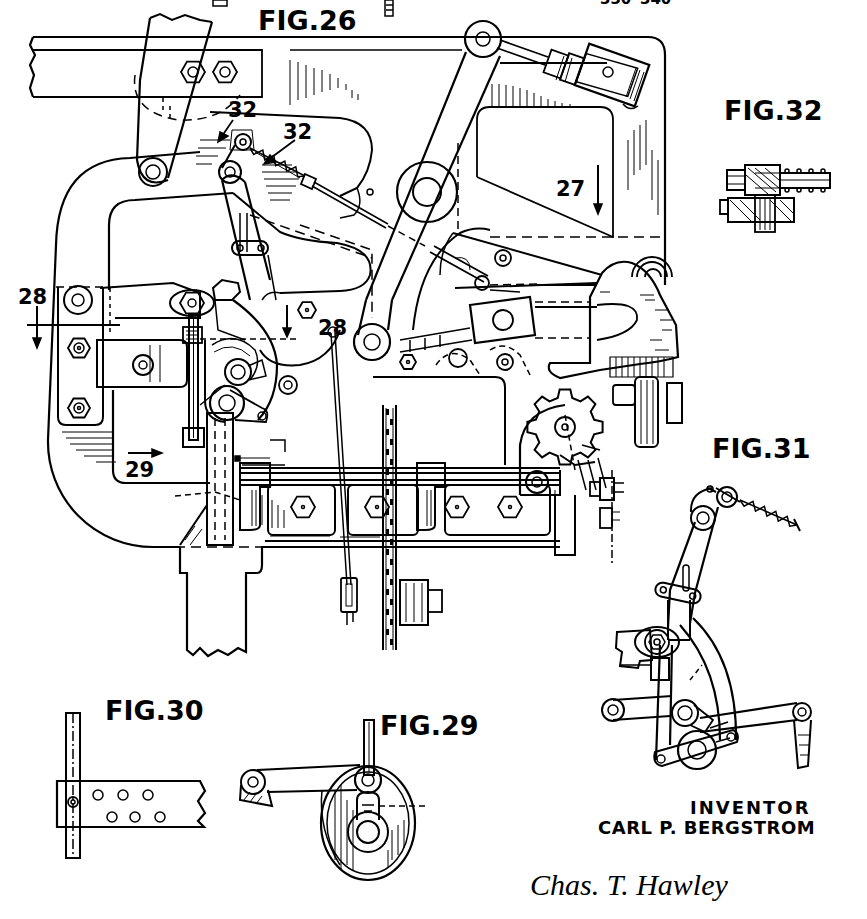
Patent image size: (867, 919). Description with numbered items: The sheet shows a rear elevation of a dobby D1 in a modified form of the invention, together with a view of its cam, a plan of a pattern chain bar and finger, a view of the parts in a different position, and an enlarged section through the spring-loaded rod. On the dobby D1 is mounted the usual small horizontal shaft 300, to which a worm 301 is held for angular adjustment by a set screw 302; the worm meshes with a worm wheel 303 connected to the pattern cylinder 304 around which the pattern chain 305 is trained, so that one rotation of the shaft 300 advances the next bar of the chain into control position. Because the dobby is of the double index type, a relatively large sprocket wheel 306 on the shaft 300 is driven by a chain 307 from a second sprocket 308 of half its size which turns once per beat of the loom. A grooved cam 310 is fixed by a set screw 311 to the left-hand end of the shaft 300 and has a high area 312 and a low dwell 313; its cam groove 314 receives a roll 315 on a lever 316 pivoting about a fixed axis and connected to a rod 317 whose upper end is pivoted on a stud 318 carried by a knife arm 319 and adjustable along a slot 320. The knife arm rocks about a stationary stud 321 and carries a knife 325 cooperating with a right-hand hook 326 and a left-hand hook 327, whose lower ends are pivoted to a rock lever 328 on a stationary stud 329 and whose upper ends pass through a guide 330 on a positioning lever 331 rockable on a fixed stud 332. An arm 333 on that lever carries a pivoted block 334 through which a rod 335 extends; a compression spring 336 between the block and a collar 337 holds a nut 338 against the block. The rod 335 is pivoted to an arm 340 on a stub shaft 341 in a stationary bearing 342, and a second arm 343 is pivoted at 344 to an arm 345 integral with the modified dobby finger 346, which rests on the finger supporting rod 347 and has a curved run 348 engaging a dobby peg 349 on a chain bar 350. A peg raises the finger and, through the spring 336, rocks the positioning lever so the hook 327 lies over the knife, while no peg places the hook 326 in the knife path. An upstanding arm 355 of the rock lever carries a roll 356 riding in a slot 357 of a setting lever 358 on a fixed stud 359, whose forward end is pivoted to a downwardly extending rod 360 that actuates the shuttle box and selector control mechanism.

In FIG. 26, the dobby D1 is at (660, 62).
In FIG. 26, the horizontal shaft 300 is at (462, 470).
In FIG. 29, the horizontal shaft 300 is at (380, 830).
In FIG. 26, the worm 301 is at (588, 495).
In FIG. 26, the set screw 302 is at (604, 492).
In FIG. 26, the worm wheel 303 is at (540, 412).
In FIG. 26, the pattern cylinder 304 is at (528, 430).
In FIG. 26, the pattern chain 305 is at (605, 537).
In FIG. 26, the sprocket wheel 306 is at (398, 430).
In FIG. 26, the chain 307 is at (398, 569).
In FIG. 26, the second sprocket 308 is at (410, 630).
In FIG. 26, the cam 310 is at (214, 500).
In FIG. 29, the cam 310 is at (322, 835).
In FIG. 26, the set screw 311 is at (274, 455).
In FIG. 29, the set screw 311 is at (409, 806).
In FIG. 29, the high area 312 is at (382, 784).
In FIG. 29, the low dwell 313 is at (375, 868).
In FIG. 29, the cam groove 314 is at (405, 835).
In FIG. 26, the roll 315 is at (210, 490).
In FIG. 26, the lever 316 is at (192, 448).
In FIG. 29, the lever 316 is at (302, 780).
In FIG. 26, the rod 317 is at (183, 358).
In FIG. 31, the rod 317 is at (651, 664).
In FIG. 29, the rod 317 is at (364, 736).
In FIG. 26, the stud 318 is at (188, 294).
In FIG. 31, the stud 318 is at (650, 632).
In FIG. 26, the knife arm 319 is at (130, 296).
In FIG. 31, the knife arm 319 is at (627, 644).
In FIG. 26, the slot 320 is at (178, 305).
In FIG. 31, the slot 320 is at (643, 638).
In FIG. 26, the stationary stud 321 is at (78, 296).
In FIG. 26, the knife 325 is at (258, 290).
In FIG. 31, the knife 325 is at (700, 636).
In FIG. 26, the right-hand hook 326 is at (268, 306).
In FIG. 31, the right-hand hook 326 is at (737, 678).
In FIG. 26, the left-hand hook 327 is at (218, 288).
In FIG. 31, the left-hand hook 327 is at (660, 680).
In FIG. 26, the rock lever 328 is at (210, 406).
In FIG. 31, the rock lever 328 is at (726, 746).
In FIG. 26, the stationary stud 329 is at (222, 410).
In FIG. 31, the stationary stud 329 is at (690, 766).
In FIG. 26, the guide 330 is at (270, 247).
In FIG. 31, the guide 330 is at (703, 600).
In FIG. 26, the positioning lever 331 is at (248, 228).
In FIG. 31, the positioning lever 331 is at (698, 562).
In FIG. 26, the fixed stud 332 is at (238, 178).
In FIG. 31, the fixed stud 332 is at (707, 525).
In FIG. 26, the arm 333 is at (247, 147).
In FIG. 32, the arm 333 is at (736, 222).
In FIG. 31, the arm 333 is at (725, 507).
In FIG. 32, the block 334 is at (768, 165).
In FIG. 26, the rod 335 is at (340, 210).
In FIG. 32, the rod 335 is at (822, 190).
In FIG. 31, the rod 335 is at (755, 505).
In FIG. 26, the compression spring 336 is at (272, 160).
In FIG. 32, the compression spring 336 is at (810, 170).
In FIG. 31, the compression spring 336 is at (780, 516).
In FIG. 26, the collar 337 is at (318, 182).
In FIG. 26, the nut 338 is at (238, 146).
In FIG. 32, the nut 338 is at (740, 170).
In FIG. 31, the nut 338 is at (715, 490).
In FIG. 26, the arm 340 is at (483, 275).
In FIG. 26, the stub shaft 341 is at (506, 250).
In FIG. 26, the stationary bearing 342 is at (588, 262).
In FIG. 26, the second arm 343 is at (503, 280).
In FIG. 26, the pivot 344 is at (480, 300).
In FIG. 26, the arm 345 is at (622, 285).
In FIG. 26, the dobby finger 346 is at (670, 334).
In FIG. 30, the dobby finger 346 is at (76, 768).
In FIG. 26, the finger supporting rod 347 is at (498, 366).
In FIG. 26, the curved run 348 is at (604, 366).
In FIG. 26, the dobby peg 349 is at (518, 372).
In FIG. 30, the dobby peg 349 is at (76, 806).
In FIG. 26, the chain bar 350 is at (612, 480).
In FIG. 30, the chain bar 350 is at (175, 798).
In FIG. 26, the upstanding arm 355 is at (268, 412).
In FIG. 31, the upstanding arm 355 is at (670, 735).
In FIG. 26, the roll 356 is at (252, 368).
In FIG. 31, the roll 356 is at (690, 700).
In FIG. 26, the slot 357 is at (232, 342).
In FIG. 31, the slot 357 is at (722, 722).
In FIG. 26, the setting lever 358 is at (170, 366).
In FIG. 31, the setting lever 358 is at (770, 712).
In FIG. 26, the fixed stud 359 is at (133, 368).
In FIG. 31, the fixed stud 359 is at (602, 710).
In FIG. 26, the rod 360 is at (346, 569).
In FIG. 31, the rod 360 is at (798, 758).